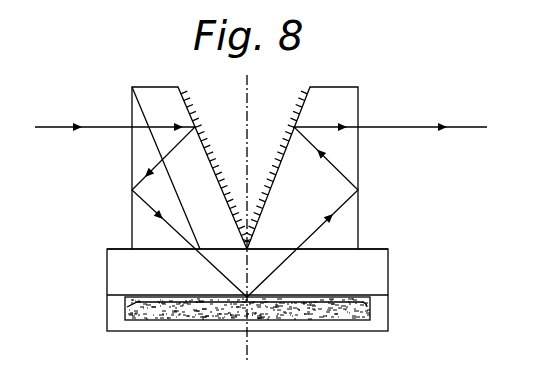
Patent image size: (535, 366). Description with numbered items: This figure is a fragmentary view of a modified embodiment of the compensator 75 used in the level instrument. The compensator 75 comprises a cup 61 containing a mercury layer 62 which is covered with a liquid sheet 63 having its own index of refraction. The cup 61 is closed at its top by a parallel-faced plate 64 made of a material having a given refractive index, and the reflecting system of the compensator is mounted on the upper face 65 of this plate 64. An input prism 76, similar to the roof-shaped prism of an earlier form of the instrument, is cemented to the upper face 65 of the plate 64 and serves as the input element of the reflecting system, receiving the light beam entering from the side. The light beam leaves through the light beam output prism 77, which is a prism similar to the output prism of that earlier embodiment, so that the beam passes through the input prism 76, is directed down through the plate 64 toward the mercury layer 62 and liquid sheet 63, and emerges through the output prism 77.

The cup 61 is at (370, 312).
The mercury layer 62 is at (347, 313).
The liquid sheet 63 is at (287, 297).
The parallel-faced plate 64 is at (377, 270).
The upper face of plate 65 is at (373, 248).
The compensator 75 is at (271, 168).
The input prism 76 is at (195, 163).
The light beam output prism 77 is at (350, 113).